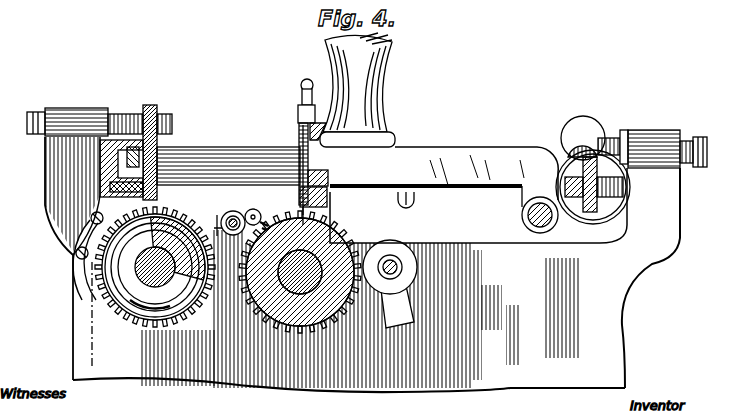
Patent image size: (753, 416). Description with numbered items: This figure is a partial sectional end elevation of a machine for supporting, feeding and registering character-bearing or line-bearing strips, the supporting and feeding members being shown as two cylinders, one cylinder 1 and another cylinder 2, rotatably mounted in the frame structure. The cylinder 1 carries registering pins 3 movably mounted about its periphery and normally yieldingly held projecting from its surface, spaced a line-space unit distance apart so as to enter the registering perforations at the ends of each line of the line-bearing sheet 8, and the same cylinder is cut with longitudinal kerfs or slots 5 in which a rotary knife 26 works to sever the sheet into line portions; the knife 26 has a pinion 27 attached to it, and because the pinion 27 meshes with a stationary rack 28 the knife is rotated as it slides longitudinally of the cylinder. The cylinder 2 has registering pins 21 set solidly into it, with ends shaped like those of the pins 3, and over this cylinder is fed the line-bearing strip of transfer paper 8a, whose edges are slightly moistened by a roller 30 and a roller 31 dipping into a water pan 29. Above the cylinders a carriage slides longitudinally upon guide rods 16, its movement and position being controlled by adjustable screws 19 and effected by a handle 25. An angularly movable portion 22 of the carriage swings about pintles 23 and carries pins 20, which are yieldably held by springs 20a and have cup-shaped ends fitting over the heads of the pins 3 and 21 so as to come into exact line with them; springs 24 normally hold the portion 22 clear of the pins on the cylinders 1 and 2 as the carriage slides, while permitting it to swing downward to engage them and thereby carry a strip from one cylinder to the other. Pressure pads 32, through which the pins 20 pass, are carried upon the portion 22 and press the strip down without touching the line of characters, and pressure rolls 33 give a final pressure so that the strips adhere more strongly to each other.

The cylinder 1 is at (128, 262).
The cylinder 2 is at (309, 313).
The registering pins 3 is at (216, 232).
The longitudinal kerfs or slots 5 is at (160, 222).
The line-bearing sheet 8 is at (361, 276).
The line-bearing strip of transfer paper 8a is at (349, 388).
The guide rods 16 is at (205, 158).
The adjustable screws 19 is at (145, 108).
The pins 20 is at (303, 152).
The springs 20a is at (302, 106).
The registering pins 21 is at (343, 238).
The angularly movable portion 22 is at (478, 195).
The pintles 23 is at (527, 216).
The springs 24 is at (298, 144).
The handle 25 is at (385, 78).
The rotary knife 26 is at (172, 120).
The pinion 27 is at (133, 115).
The stationary rack 28 is at (100, 183).
The water pan 29 is at (233, 216).
The roller 30 is at (253, 218).
The roller 31 is at (263, 224).
The pressure pads 32 is at (322, 206).
The pressure rolls 33 is at (410, 248).